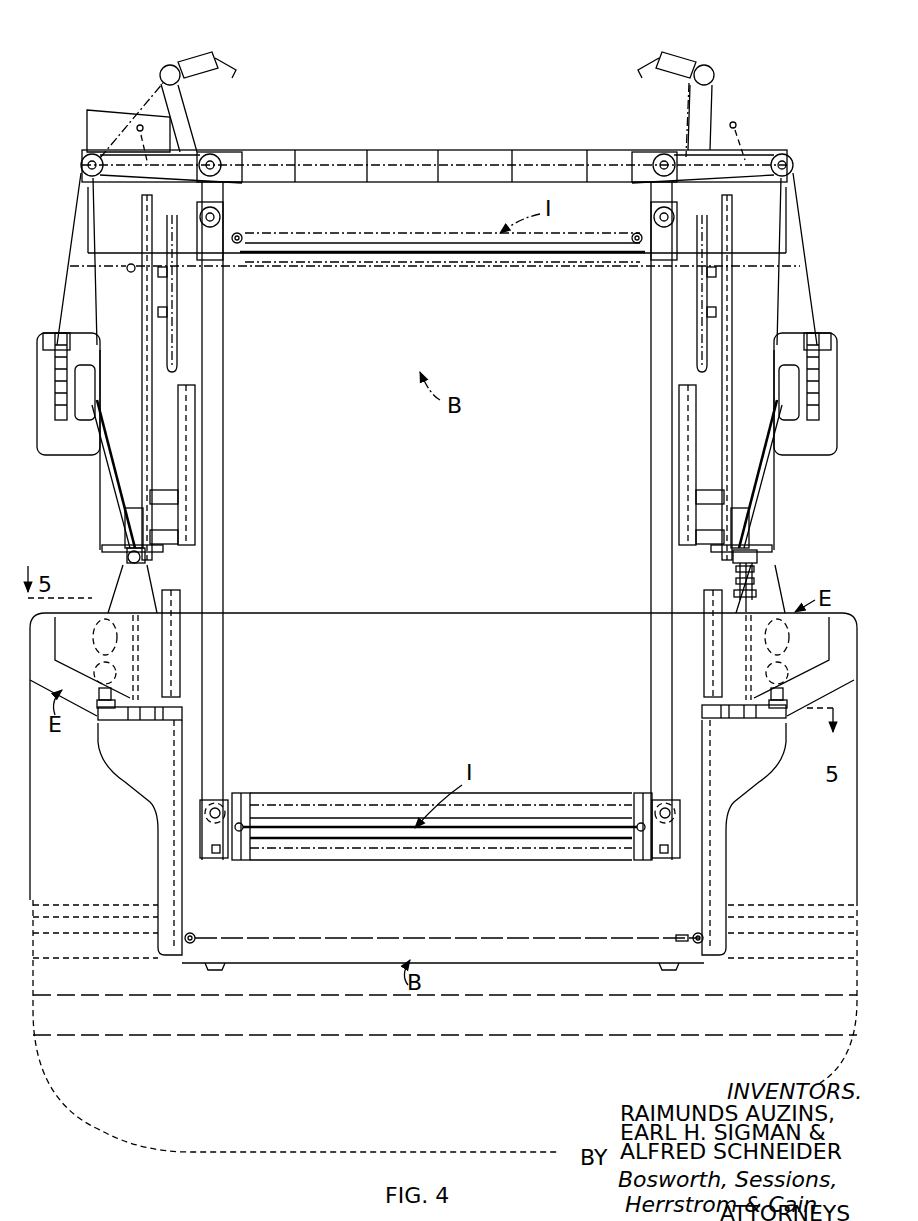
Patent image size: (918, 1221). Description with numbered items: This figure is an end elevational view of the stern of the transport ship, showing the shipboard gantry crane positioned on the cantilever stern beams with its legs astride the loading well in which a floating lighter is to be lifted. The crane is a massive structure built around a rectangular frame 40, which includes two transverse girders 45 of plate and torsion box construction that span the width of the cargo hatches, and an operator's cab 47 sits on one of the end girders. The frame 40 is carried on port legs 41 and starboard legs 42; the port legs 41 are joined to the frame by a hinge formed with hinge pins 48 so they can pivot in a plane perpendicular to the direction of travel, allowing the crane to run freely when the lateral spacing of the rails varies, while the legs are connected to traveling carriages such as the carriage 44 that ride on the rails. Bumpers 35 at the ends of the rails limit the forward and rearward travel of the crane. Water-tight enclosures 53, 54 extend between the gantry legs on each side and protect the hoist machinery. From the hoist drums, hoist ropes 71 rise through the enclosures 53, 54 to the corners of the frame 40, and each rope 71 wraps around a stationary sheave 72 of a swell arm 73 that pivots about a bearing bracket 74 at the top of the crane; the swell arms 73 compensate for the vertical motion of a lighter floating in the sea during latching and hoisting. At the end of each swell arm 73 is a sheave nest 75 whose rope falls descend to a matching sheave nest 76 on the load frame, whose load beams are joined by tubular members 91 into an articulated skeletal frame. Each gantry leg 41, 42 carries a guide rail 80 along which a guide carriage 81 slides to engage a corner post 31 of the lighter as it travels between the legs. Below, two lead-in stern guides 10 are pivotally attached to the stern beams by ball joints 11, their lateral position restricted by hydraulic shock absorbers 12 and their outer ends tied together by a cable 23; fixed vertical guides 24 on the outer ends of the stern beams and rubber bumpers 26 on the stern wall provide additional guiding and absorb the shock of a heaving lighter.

The lead-in stern guide 10 is at (150, 775).
The ball joint 11 is at (168, 722).
The hydraulic shock absorber 12 is at (93, 648).
The cable 23 is at (530, 938).
The fixed vertical guide 24 is at (180, 665).
The rubber bumper 26 is at (240, 795).
The corner post 31 is at (215, 268).
The bumper 35 is at (125, 560).
The rectangular frame 40 is at (338, 180).
The port leg 41 is at (80, 236).
The starboard leg 42 is at (786, 290).
The traveling carriage 44 is at (762, 585).
The transverse girder 45 is at (445, 181).
The operator's cab 47 is at (95, 110).
The hinge pin 48 is at (131, 263).
The enclosure 53 is at (62, 455).
The enclosure 54 is at (815, 456).
The hoist rope 71 is at (210, 555).
The stationary sheave 72 is at (82, 165).
The swell arm 73 is at (130, 100).
The bearing bracket 74 is at (98, 178).
The sheave nest 75 is at (178, 58).
The sheave nest 76 is at (224, 212).
The guide rail 80 is at (154, 420).
The guide carriage 81 is at (183, 322).
The tubular member 91 is at (340, 233).